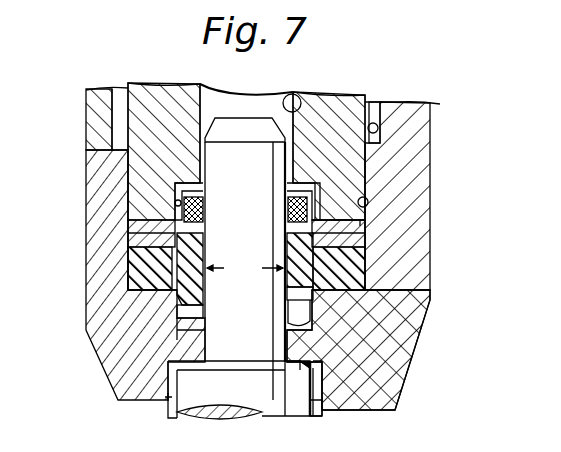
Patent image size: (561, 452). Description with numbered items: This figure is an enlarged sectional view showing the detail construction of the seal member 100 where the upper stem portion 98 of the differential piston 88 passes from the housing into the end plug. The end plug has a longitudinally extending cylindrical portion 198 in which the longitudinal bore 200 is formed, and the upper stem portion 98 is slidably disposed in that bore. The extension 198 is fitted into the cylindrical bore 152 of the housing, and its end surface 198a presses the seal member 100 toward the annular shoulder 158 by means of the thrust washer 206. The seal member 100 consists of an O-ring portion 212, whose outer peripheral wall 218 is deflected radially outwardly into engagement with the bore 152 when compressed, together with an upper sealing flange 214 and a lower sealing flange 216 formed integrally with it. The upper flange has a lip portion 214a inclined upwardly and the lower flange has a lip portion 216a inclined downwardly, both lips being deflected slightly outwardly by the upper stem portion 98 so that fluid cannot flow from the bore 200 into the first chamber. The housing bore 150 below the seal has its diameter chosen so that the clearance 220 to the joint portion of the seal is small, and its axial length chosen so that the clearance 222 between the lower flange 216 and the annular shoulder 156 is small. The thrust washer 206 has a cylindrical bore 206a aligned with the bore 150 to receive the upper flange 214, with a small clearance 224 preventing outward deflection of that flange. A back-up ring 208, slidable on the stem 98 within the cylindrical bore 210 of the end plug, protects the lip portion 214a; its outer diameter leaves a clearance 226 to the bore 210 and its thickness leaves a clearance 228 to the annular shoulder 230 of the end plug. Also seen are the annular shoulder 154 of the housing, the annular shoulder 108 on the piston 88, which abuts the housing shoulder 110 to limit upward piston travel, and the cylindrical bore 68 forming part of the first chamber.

The upper stem portion 98 is at (258, 182).
The longitudinally extending cylindrical portion 198 is at (152, 107).
The longitudinal bore 200 is at (298, 95).
The annular shoulder 154 is at (383, 133).
The clearance 228 is at (321, 186).
The clearance 226 is at (322, 196).
The cylindrical bore 152 is at (368, 206).
The end surface 198a is at (368, 224).
The lip portion 214a is at (366, 238).
The upper sealing flange 214 is at (362, 272).
The clearance 224 is at (305, 189).
The seal member 100 is at (493, 302).
The annular shoulder 158 is at (313, 297).
The lower sealing flange 216 is at (313, 322).
The lip portion 216a is at (310, 330).
The cylindrical bore 150 is at (320, 357).
The annular shoulder 156 is at (330, 366).
The annular shoulder 110 is at (358, 373).
The annular shoulder 108 is at (342, 383).
The cylindrical bore 68 is at (317, 415).
The differential piston 88 is at (160, 397).
The clearance 222 is at (172, 328).
The clearance 220 is at (176, 312).
The O-ring portion 212 is at (176, 300).
The outer peripheral wall 218 is at (128, 292).
The cylindrical bore 206a is at (128, 256).
The thrust washer 206 is at (128, 245).
The back-up ring 208 is at (165, 222).
The cylindrical bore 210 is at (182, 207).
The annular shoulder 230 is at (174, 186).